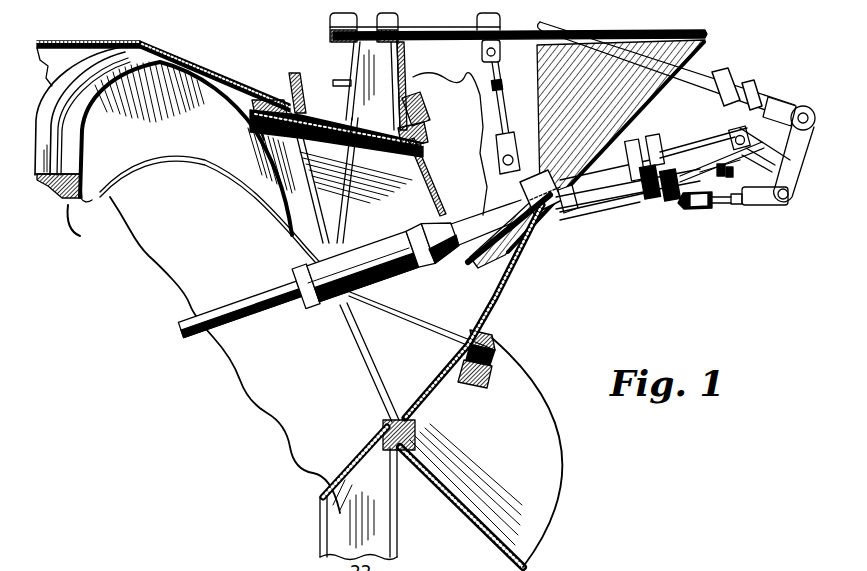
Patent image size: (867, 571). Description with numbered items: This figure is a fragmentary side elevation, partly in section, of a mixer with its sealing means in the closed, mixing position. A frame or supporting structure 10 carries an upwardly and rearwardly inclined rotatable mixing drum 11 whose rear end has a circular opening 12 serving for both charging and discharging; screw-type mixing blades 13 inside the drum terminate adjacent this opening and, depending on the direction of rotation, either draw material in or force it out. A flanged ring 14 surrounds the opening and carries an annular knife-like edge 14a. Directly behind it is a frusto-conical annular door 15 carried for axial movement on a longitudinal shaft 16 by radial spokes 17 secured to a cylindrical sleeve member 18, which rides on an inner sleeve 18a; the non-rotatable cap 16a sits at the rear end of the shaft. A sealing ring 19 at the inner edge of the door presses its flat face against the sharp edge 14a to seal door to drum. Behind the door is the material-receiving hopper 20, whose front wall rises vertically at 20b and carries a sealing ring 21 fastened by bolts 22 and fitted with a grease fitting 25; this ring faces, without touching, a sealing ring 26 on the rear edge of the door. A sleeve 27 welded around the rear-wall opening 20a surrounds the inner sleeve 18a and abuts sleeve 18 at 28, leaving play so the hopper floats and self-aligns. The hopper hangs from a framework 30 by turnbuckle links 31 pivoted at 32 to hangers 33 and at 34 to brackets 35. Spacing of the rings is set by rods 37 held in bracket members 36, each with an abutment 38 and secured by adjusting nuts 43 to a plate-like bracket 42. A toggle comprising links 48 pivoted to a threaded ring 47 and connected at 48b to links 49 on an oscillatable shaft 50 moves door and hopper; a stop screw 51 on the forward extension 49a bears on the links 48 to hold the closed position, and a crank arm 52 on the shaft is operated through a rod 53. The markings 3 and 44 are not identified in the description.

The block 3 is at (526, 193).
The frame or supporting structure 10 is at (337, 517).
The mixing drum 11 is at (182, 65).
The circular opening or orifice 12 is at (367, 383).
The mixing blades 13 is at (92, 200).
The flanged ring 14 is at (262, 100).
The knife-like edge 14a is at (262, 134).
The annular door 15 is at (328, 130).
The shaft 16 is at (267, 296).
The non-rotatable cap 16a is at (765, 135).
The radial supporting arms or spokes 17 is at (346, 213).
The cylindrical sleeve member 18 is at (396, 285).
The inner sleeve 18a is at (632, 200).
The annular sealing ring 19 is at (298, 100).
The material-receiving hopper 20 is at (518, 140).
The opening 20a is at (588, 206).
The front wall 20b is at (415, 78).
The sealing ring 21 is at (420, 141).
The bolts 22 is at (420, 112).
The lubricant or grease fitting 25 is at (492, 364).
The sealing ring 26 is at (478, 380).
The sleeve 27 is at (466, 213).
The abutment 28 is at (405, 229).
The framework 30 is at (565, 32).
The links 31 is at (502, 88).
The upper connection 32 is at (500, 52).
The hangers or clamps 33 is at (500, 18).
The lower connection 34 is at (497, 152).
The brackets 35 is at (503, 170).
The bracket members 36 is at (535, 228).
The rods 37 is at (602, 208).
The enlargement or abutment 38 is at (566, 212).
The plate-like bracket or supporting member 42 is at (653, 200).
The inner adjusting nuts 43 is at (640, 198).
The sleeve 44 is at (692, 154).
The internally threaded ring 47 is at (673, 200).
The links 48 is at (730, 145).
The pivotal connection 48b is at (748, 118).
The links 49 is at (756, 158).
The forward extension 49a is at (716, 175).
The oscillatable transversely extending shaft 50 is at (805, 106).
The adjustable stop screw 51 is at (733, 173).
The depending crank arm 52 is at (792, 183).
The longitudinally extending rod 53 is at (708, 208).